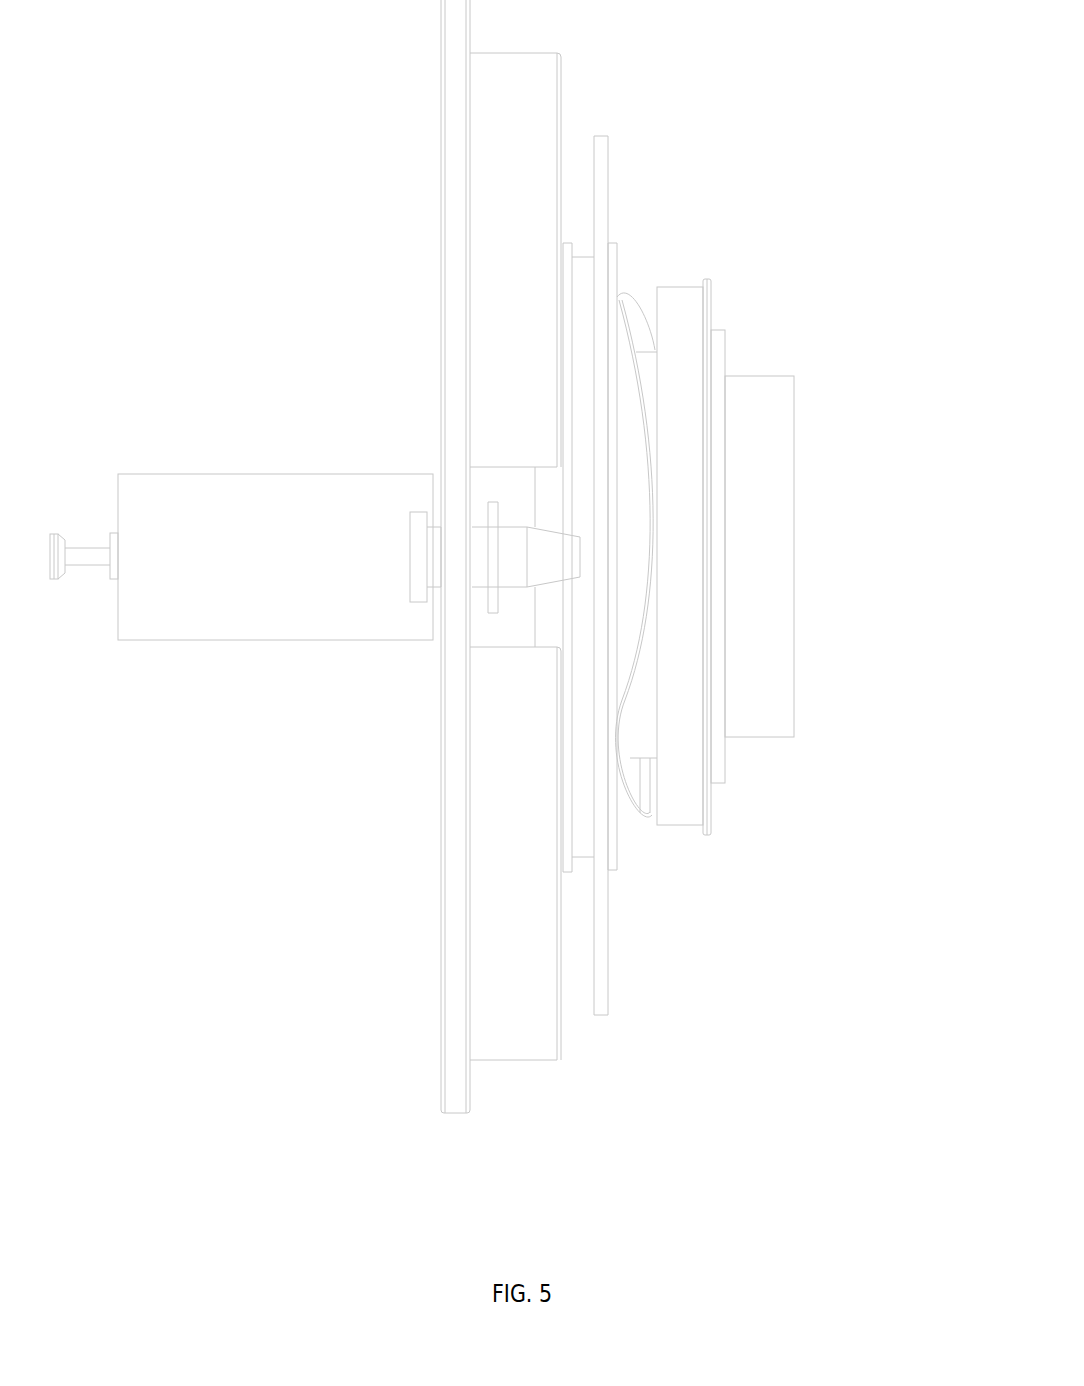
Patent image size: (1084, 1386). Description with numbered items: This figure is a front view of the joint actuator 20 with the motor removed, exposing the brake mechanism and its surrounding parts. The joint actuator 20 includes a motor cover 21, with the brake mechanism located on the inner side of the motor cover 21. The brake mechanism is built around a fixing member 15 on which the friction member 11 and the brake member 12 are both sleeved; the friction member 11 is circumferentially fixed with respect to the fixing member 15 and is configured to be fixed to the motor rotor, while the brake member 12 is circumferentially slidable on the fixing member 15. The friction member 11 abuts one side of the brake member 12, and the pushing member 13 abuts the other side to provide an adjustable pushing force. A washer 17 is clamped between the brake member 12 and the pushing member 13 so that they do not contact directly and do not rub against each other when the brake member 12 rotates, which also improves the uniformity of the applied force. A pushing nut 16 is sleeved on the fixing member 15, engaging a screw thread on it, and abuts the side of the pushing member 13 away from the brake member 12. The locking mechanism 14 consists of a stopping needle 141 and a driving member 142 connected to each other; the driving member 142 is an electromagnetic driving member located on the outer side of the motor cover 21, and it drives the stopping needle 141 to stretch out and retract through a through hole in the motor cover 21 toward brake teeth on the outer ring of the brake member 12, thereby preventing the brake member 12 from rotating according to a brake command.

The joint actuator 20 is at (258, 98).
The motor cover 21 is at (497, 1035).
The locking mechanism 14 is at (315, 666).
The stopping needle 141 is at (527, 560).
The driving member 142 is at (218, 610).
The friction member 11 is at (577, 827).
The brake member 12 is at (600, 982).
The washer 17 is at (612, 858).
The pushing member 13 is at (638, 795).
The pushing nut 16 is at (692, 776).
The fixing member 15 is at (767, 592).